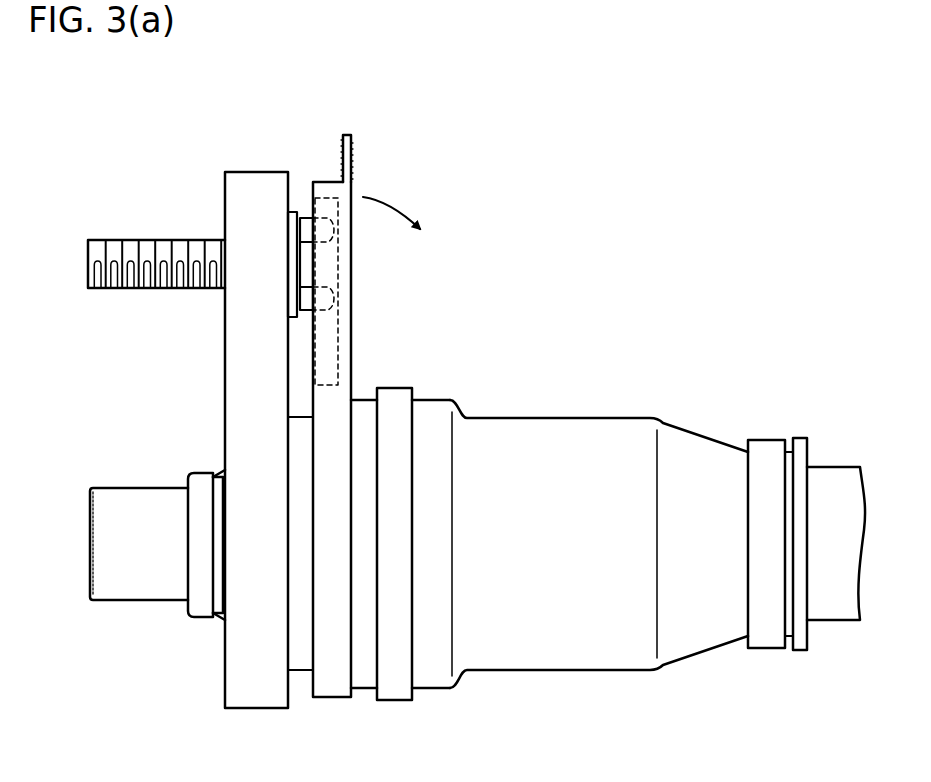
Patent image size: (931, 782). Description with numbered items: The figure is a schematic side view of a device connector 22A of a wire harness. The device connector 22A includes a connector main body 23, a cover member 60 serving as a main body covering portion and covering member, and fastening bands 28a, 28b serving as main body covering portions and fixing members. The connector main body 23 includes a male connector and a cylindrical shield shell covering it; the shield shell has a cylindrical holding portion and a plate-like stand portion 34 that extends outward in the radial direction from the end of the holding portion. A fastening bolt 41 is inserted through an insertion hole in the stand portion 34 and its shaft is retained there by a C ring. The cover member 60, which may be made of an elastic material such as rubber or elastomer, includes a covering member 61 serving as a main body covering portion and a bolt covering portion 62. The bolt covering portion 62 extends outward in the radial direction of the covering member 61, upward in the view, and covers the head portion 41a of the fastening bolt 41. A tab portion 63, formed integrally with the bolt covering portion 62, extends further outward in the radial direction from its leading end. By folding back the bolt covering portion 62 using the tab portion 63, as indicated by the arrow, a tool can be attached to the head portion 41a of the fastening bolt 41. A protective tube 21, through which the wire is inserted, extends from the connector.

The protective tube 21 is at (841, 467).
The device connector 22A is at (768, 248).
The connector main body 23 is at (198, 204).
The fastening band 28a is at (399, 388).
The fastening band 28b is at (766, 440).
The stand portion 34 is at (246, 172).
The fastening bolt 41 is at (133, 289).
The head portion 41a is at (306, 217).
The cover member 60 is at (672, 328).
The covering member 61 is at (558, 417).
The bolt covering portion 62 is at (351, 264).
The tab portion 63 is at (352, 151).